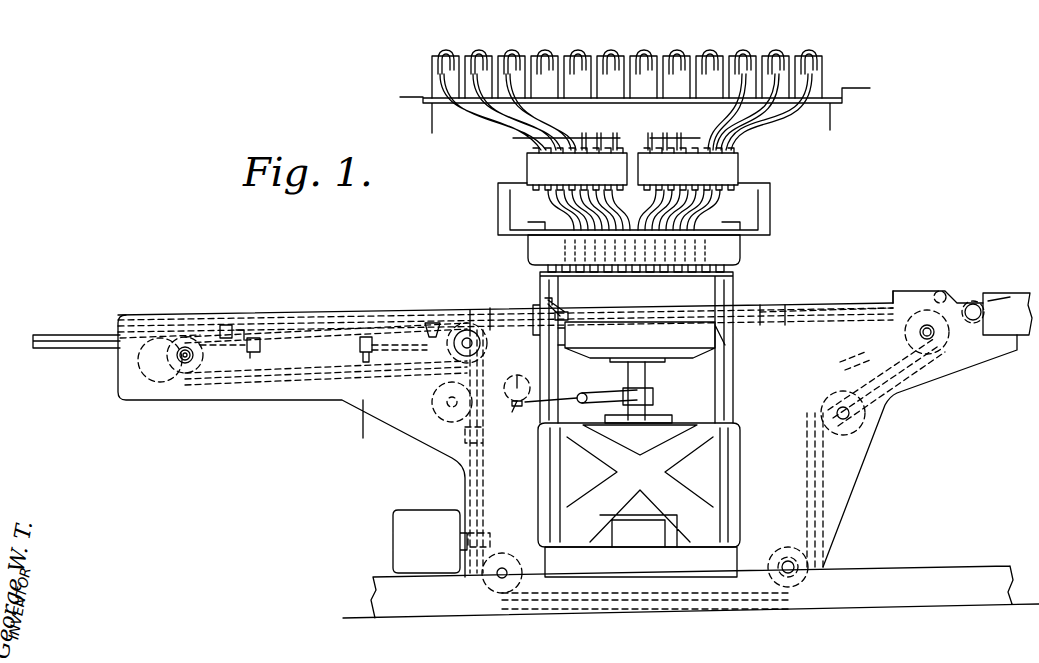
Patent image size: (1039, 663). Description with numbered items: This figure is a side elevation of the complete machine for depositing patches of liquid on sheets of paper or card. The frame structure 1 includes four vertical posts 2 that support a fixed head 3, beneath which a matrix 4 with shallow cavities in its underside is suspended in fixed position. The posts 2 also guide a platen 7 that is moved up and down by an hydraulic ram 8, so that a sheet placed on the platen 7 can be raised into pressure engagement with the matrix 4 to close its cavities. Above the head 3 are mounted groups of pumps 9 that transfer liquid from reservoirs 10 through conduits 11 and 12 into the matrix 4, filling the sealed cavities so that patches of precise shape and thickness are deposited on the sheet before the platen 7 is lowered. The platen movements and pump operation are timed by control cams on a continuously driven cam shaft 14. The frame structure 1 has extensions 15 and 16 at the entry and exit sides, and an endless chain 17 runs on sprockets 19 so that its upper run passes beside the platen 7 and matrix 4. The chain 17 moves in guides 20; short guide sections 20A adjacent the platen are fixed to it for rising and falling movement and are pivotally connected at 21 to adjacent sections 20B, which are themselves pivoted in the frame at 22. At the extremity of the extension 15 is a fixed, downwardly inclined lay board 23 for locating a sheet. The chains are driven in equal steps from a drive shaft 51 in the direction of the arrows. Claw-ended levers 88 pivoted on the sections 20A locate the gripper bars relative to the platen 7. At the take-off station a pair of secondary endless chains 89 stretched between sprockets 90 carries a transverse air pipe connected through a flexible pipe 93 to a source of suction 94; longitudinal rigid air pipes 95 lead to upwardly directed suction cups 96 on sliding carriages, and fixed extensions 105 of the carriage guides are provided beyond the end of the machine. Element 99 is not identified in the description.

The frame structure 1 is at (776, 487).
The vertical posts 2 is at (553, 484).
The fixed head 3 is at (740, 245).
The matrix 4 is at (633, 347).
The platen 7 is at (641, 372).
The hydraulic ram 8 is at (648, 414).
The pumps 9 is at (527, 164).
The reservoirs 10 is at (692, 62).
The conduits 11 is at (532, 113).
The conduits 12 is at (545, 207).
The cam shaft 14 is at (570, 382).
The extension 15 is at (860, 471).
The extension 16 is at (433, 440).
The endless chain 17 is at (825, 500).
The sprockets 19 is at (170, 388).
The guides 20 is at (483, 468).
The short guide sections 20A is at (514, 310).
The adjacent guide sections 20B is at (352, 314).
The pivotal connections 21 is at (500, 310).
The pivots 22 is at (244, 330).
The lay board 23 is at (1000, 298).
The drive shaft 51 is at (187, 363).
The claw-ended levers 88 is at (563, 312).
The secondary endless chains 89 is at (296, 318).
The sprockets 90 is at (466, 365).
The flexible pipe 93 is at (397, 322).
The source of suction 94 is at (358, 347).
The longitudinal rigid air pipes 95 is at (278, 337).
The suction cups 96 is at (226, 325).
The bracket 99 is at (252, 352).
The guide extensions 105 is at (93, 335).